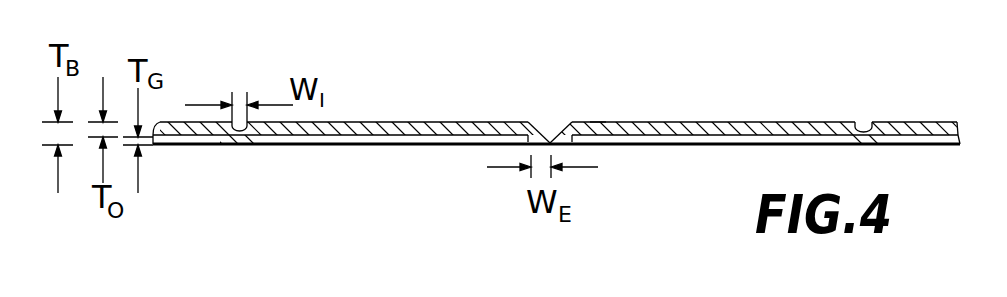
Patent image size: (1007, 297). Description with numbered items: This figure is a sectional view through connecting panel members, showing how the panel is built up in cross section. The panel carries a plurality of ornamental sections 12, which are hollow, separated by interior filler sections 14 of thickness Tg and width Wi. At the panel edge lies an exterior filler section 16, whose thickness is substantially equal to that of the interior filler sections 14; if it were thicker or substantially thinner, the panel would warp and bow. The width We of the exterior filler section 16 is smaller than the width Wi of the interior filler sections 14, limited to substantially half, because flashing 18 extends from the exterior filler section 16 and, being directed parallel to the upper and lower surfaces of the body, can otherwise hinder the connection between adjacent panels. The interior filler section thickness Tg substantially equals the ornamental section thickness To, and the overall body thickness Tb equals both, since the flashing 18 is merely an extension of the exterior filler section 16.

The ornamental sections 12 is at (423, 122).
The interior filler sections 14 is at (863, 130).
The exterior filler section 16 is at (548, 137).
The flashing 18 is at (553, 128).
The bottom surface at groove B is at (598, 122).